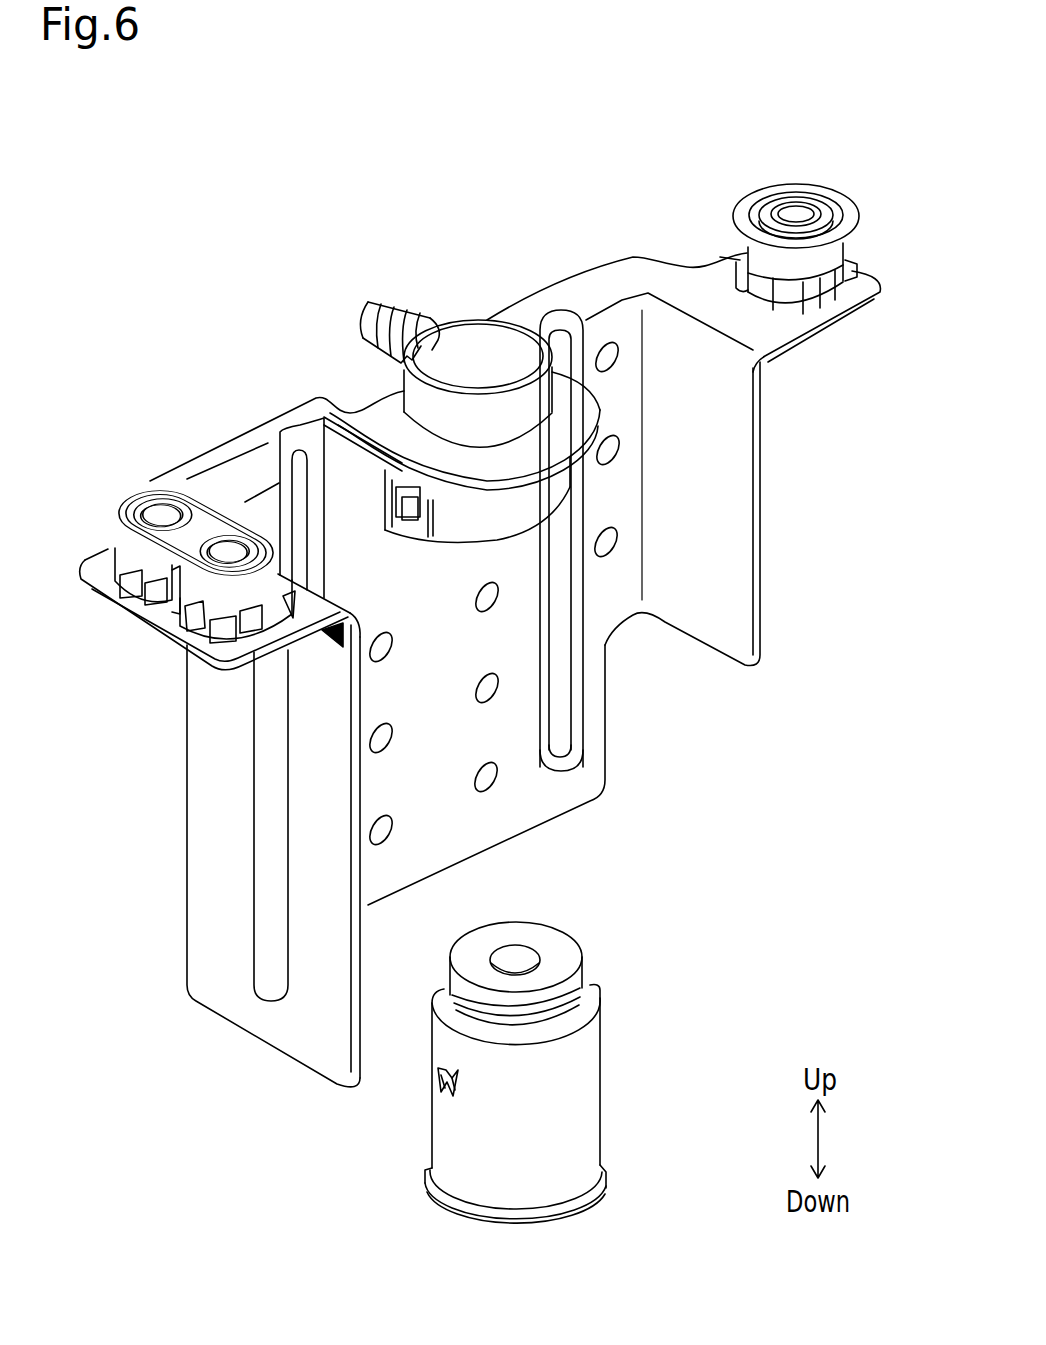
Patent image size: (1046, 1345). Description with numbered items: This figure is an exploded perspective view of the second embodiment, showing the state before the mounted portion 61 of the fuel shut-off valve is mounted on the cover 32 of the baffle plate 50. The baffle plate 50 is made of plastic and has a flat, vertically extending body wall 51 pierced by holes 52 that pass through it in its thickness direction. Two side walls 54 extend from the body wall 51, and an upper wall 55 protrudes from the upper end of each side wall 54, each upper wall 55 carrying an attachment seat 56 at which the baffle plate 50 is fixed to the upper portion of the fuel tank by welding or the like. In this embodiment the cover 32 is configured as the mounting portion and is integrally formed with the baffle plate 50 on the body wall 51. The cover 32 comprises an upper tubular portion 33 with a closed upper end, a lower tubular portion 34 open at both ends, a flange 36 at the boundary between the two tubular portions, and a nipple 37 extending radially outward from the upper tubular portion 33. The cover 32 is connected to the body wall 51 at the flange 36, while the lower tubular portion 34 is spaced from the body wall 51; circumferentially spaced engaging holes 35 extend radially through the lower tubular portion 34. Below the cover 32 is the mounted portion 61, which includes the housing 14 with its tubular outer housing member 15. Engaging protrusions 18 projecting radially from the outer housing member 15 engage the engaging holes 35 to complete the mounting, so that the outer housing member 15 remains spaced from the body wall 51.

The housing 14 is at (528, 1105).
The outer housing member 15 is at (588, 1068).
The engaging protrusion 18 is at (437, 1080).
The cover 32 is at (515, 420).
The upper tubular portion 33 is at (466, 337).
The lower tubular portion 34 is at (450, 548).
The engaging hole 35 is at (410, 520).
The flange 36 is at (583, 399).
The nipple 37 is at (388, 302).
The baffle plate 50 is at (594, 843).
The body wall 51 is at (437, 858).
The holes 52 is at (616, 535).
The side wall 54 is at (757, 546).
The upper wall 55 is at (800, 318).
The attachment seat 56 is at (766, 214).
The mounted portion 61 is at (587, 1217).